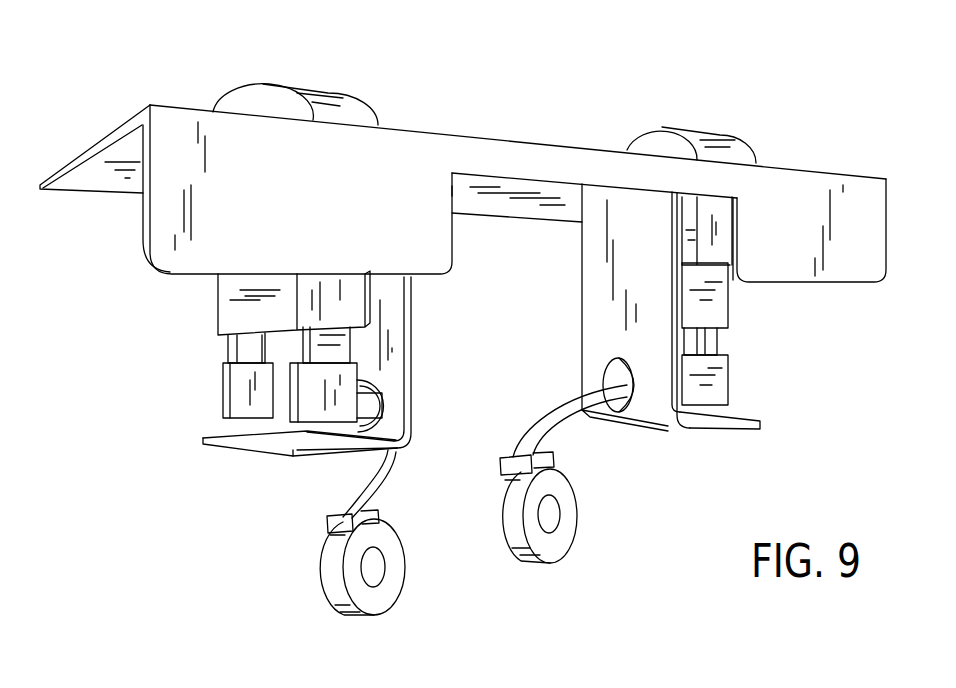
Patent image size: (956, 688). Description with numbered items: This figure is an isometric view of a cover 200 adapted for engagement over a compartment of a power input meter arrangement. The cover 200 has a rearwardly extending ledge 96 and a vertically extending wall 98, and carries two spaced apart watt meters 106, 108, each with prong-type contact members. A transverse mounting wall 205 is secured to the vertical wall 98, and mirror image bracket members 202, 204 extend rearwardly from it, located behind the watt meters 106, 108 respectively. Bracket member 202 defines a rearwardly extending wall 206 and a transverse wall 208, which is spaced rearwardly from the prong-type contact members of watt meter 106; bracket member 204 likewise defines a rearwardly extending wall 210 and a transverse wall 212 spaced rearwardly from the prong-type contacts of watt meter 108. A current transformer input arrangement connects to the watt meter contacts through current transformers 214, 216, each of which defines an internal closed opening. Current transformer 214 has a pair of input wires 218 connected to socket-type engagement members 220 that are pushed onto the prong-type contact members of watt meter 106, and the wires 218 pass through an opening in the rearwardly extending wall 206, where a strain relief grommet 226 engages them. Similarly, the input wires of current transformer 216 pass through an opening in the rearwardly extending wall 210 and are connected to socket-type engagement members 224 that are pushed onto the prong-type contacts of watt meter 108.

The rearwardly extending ledge 96 is at (305, 199).
The vertically extending wall 98 is at (126, 152).
The watt meter 106 is at (696, 128).
The watt meter 108 is at (304, 85).
The cover 200 is at (112, 223).
The bracket member 202 is at (666, 425).
The bracket member 204 is at (427, 412).
The transverse mounting wall 205 is at (482, 206).
The rearwardly extending wall 206 is at (583, 270).
The transverse wall 208 is at (722, 436).
The rearwardly extending wall 210 is at (412, 340).
The transverse wall 212 is at (248, 452).
The current transformer 214 is at (576, 547).
The current transformer 216 is at (308, 580).
The input wires 218 is at (556, 420).
The socket-type engagement members 220 is at (730, 378).
The socket-type engagement members 224 is at (297, 393).
The strain relief grommet 226 is at (610, 368).